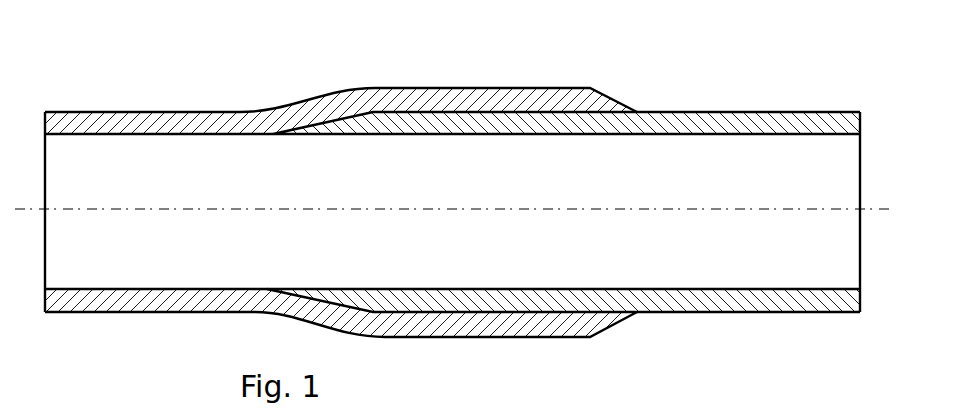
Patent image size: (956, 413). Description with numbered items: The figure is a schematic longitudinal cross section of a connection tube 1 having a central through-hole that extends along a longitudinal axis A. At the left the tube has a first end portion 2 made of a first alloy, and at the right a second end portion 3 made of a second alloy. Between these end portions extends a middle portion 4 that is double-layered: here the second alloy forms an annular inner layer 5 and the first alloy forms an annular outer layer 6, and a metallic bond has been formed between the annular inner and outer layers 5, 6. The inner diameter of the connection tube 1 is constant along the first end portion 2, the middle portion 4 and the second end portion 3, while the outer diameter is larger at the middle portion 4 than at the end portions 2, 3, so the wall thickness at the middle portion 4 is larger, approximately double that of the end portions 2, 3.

The connection tube 1 is at (458, 200).
The first end portion 2 is at (158, 112).
The second end portion 3 is at (833, 123).
The middle portion 4 is at (493, 91).
The annular inner layer 5 is at (557, 302).
The annular outer layer 6 is at (591, 338).